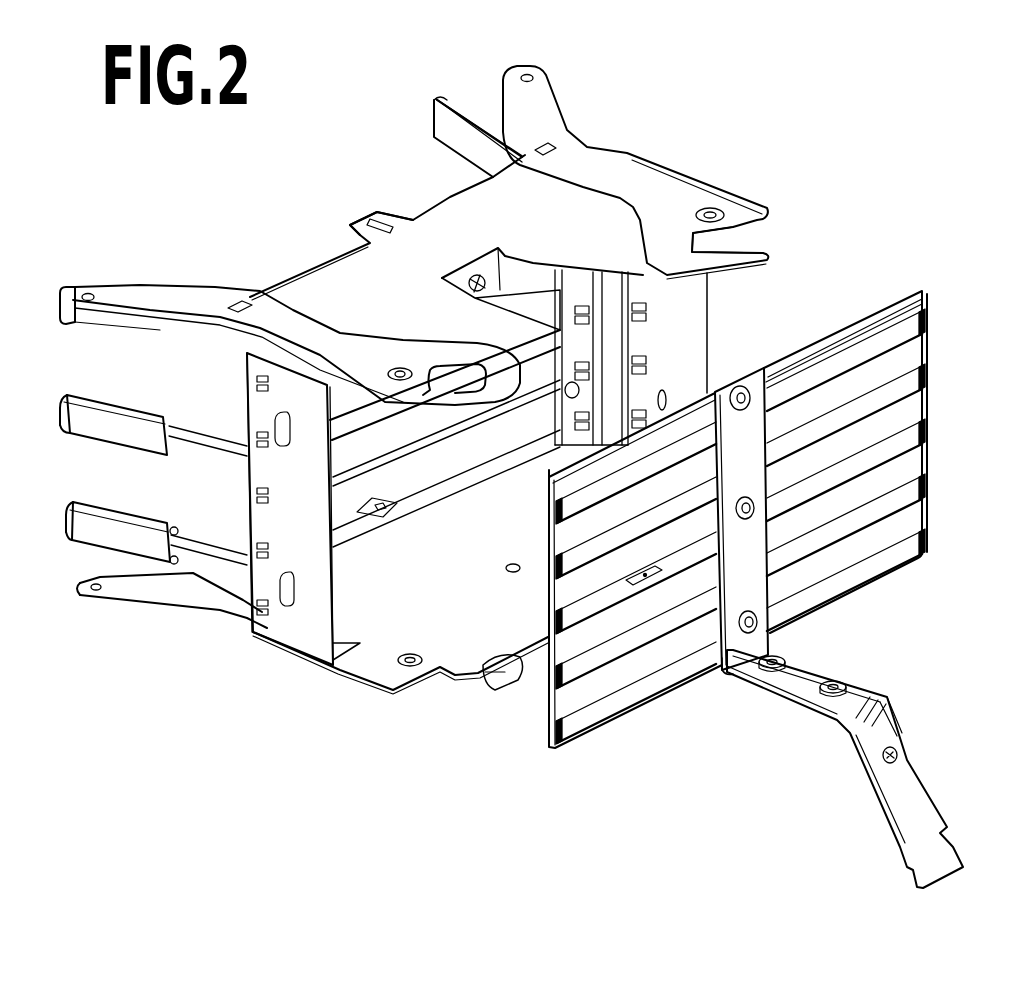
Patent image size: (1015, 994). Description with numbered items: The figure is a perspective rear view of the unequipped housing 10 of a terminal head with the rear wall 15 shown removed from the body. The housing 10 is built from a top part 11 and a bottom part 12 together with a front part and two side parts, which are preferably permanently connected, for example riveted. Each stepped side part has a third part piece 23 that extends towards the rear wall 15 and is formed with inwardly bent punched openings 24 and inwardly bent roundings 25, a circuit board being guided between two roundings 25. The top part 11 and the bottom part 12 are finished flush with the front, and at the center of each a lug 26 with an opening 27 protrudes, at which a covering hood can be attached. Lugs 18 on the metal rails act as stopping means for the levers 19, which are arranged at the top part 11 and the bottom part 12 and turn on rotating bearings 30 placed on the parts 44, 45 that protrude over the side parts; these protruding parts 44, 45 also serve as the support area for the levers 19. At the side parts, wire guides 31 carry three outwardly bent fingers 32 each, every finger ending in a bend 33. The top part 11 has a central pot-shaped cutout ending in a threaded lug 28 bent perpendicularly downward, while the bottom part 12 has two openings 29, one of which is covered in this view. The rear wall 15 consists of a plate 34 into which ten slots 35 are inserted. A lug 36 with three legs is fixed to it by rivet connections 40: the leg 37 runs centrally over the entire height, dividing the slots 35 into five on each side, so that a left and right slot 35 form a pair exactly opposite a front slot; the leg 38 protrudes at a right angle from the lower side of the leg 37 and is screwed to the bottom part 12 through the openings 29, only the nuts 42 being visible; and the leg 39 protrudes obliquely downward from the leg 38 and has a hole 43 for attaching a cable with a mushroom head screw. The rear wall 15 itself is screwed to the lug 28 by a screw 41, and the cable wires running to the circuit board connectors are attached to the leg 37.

The housing 10 is at (640, 130).
The top part 11 is at (332, 275).
The bottom part 12 is at (390, 590).
The rear wall 15 is at (933, 310).
The lug 18 is at (234, 296).
The lever 19 is at (532, 104).
The third part piece 23 is at (325, 645).
The punched opening 24 is at (290, 640).
The rounding 25 is at (650, 315).
The lug 26 is at (397, 218).
The opening 27 is at (368, 214).
The lug 28 is at (508, 266).
The opening 29 is at (512, 562).
The rotating bearing 30 is at (709, 207).
The wire guide 31 is at (245, 512).
The finger 32 is at (446, 104).
The bend 33 is at (444, 134).
The plate 34 is at (890, 303).
The slot 35 is at (935, 545).
The lug 36 is at (836, 741).
The leg 37 is at (733, 645).
The leg 38 is at (795, 692).
The leg 39 is at (900, 808).
The rivet connection 40 is at (750, 514).
The screw 41 is at (742, 396).
The nut 42 is at (776, 660).
The hole 43 is at (900, 753).
The protruding part 44 is at (740, 236).
The protruding part 45 is at (478, 668).